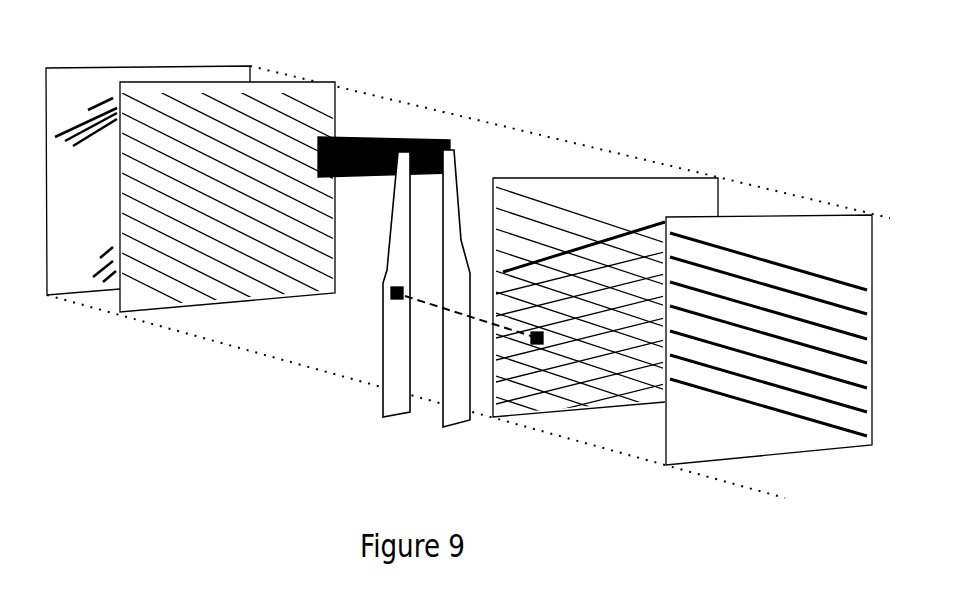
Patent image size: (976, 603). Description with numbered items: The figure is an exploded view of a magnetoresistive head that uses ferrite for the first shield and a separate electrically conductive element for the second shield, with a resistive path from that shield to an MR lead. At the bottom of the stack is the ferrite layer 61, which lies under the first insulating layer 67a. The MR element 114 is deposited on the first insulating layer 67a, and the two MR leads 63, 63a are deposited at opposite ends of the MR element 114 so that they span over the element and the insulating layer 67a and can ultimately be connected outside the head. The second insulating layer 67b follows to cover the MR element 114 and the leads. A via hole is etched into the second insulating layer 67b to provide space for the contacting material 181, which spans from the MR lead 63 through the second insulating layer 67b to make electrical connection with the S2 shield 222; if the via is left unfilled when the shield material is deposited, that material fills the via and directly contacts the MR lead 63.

The ferrite layer 61 is at (93, 80).
The first insulating layer 67a is at (313, 92).
The MR element 114 is at (398, 137).
The second insulating layer 67b is at (570, 190).
The S2 shield 222 is at (795, 227).
The MR lead 63 is at (370, 400).
The MR lead 63a is at (453, 435).
The contacting material 181 is at (547, 347).